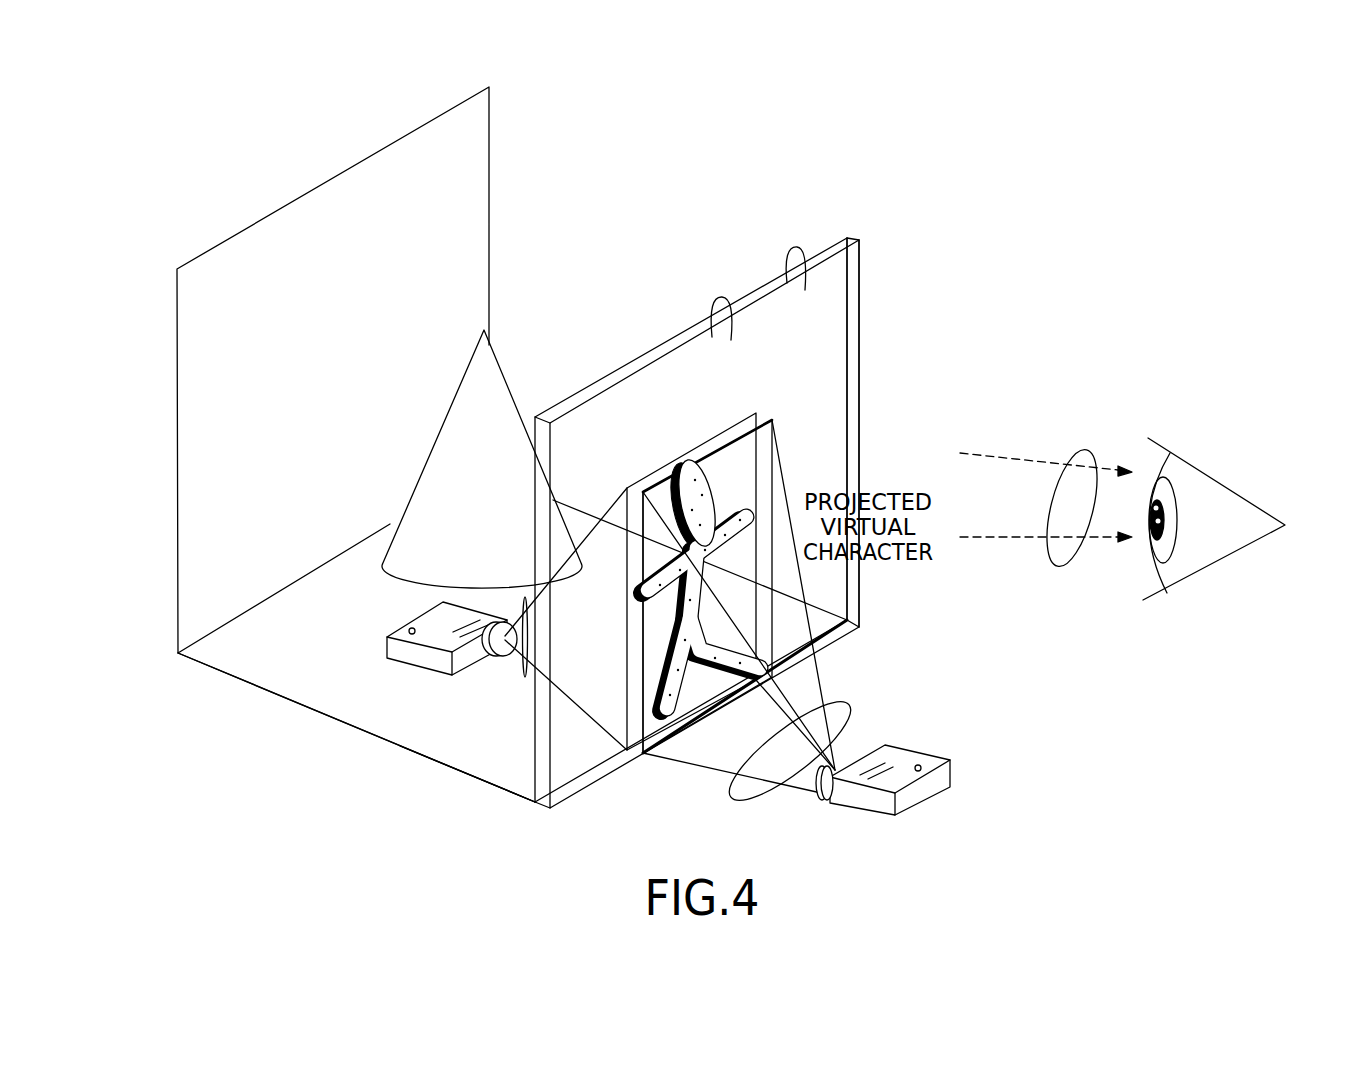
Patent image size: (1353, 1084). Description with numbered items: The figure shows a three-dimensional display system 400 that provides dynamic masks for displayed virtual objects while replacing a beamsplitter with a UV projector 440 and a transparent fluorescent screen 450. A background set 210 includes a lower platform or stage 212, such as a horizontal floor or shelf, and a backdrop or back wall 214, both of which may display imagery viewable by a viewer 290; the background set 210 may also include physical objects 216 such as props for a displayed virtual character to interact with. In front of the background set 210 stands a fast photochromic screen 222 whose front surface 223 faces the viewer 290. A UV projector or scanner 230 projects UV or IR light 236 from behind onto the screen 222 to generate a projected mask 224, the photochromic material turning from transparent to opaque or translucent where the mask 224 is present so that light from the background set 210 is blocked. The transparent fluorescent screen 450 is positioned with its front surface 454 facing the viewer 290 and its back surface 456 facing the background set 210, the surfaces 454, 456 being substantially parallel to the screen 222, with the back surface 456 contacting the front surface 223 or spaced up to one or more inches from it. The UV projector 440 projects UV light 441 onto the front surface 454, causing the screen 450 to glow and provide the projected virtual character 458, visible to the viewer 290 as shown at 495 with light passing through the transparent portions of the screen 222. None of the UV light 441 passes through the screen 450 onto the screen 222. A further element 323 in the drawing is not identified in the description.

The 3D display system 400 is at (187, 230).
The background set 210 is at (229, 700).
The lower platform or stage 212 is at (474, 778).
The backdrop or back wall 214 is at (176, 448).
The physical object 216 is at (398, 516).
The fast photochromic screen 222 is at (838, 236).
The front surface of fast photochromic screen 223 is at (849, 240).
The projected mask 224 is at (647, 481).
The UV or IR projector 230 is at (337, 752).
The UV or IR light 236 is at (523, 675).
The viewer 290 is at (1240, 488).
The screen mounting clip 323 is at (804, 282).
The UV projector 440 is at (960, 741).
The UV light 441 is at (852, 704).
The transparent fluorescent screen 450 is at (878, 379).
The front surface of transparent fluorescent screen 454 is at (862, 280).
The back surface of transparent fluorescent screen 456 is at (733, 326).
The projected virtual character 458 is at (640, 650).
The light visible to viewer 495 is at (1086, 450).